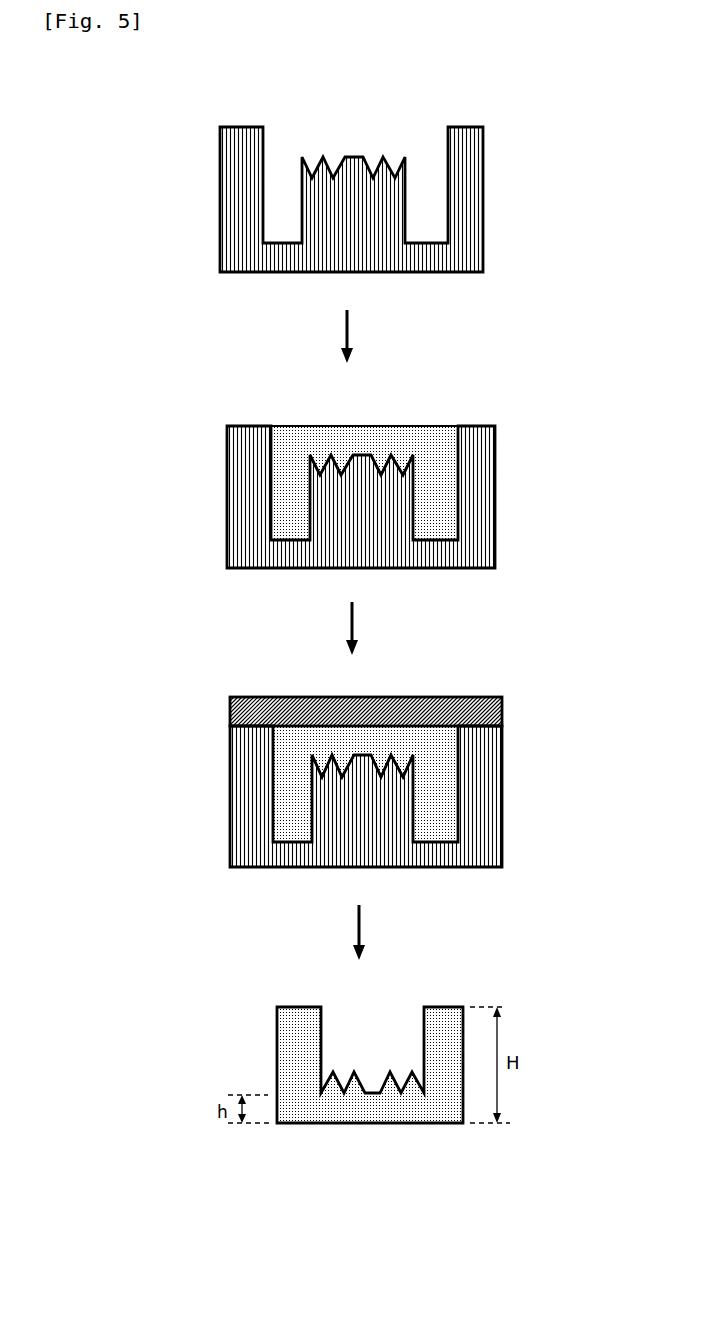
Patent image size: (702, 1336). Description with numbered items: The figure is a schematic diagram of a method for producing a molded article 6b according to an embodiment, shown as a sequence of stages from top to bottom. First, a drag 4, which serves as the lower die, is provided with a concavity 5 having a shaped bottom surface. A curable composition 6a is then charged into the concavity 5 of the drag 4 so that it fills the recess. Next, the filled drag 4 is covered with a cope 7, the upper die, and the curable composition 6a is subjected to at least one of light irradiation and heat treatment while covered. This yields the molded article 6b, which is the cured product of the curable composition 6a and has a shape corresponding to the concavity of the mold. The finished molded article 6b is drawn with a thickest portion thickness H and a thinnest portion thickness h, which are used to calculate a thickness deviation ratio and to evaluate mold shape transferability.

The drag 4 is at (396, 464).
The drag concavity 5 is at (430, 152).
The curable composition 6a is at (407, 440).
The molded article 6b is at (450, 1020).
The cope 7 is at (483, 712).